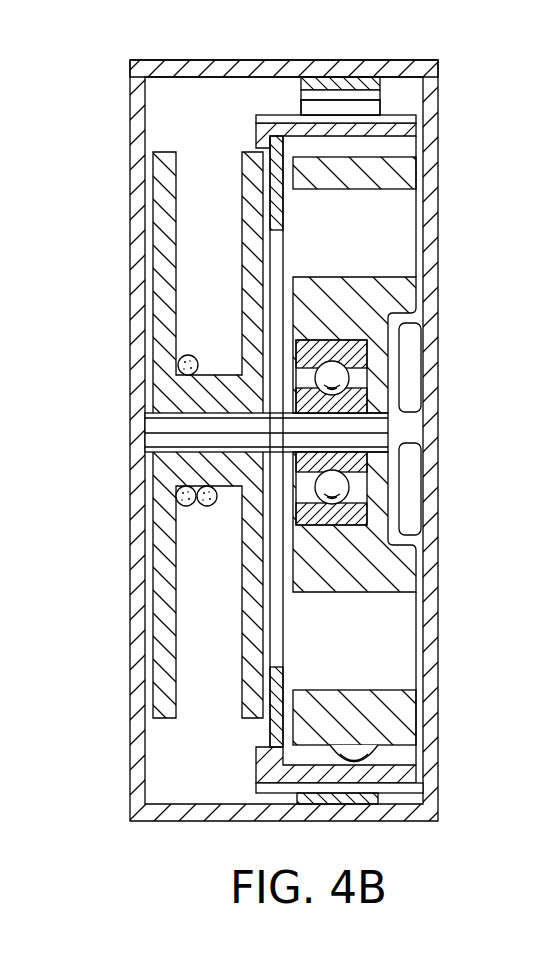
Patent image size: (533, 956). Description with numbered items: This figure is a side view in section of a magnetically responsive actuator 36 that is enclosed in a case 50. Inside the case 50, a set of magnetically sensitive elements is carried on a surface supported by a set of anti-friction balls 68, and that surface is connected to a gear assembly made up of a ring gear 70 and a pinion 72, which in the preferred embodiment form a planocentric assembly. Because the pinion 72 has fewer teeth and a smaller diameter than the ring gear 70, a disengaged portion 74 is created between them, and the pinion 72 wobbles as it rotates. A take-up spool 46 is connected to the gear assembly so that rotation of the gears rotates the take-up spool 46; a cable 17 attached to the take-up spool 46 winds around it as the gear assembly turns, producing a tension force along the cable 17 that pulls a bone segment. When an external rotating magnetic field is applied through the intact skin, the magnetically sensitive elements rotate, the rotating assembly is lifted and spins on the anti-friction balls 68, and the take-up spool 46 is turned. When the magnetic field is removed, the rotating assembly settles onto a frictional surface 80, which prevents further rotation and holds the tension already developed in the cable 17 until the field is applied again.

The actuator 36 is at (272, 55).
The case 50 is at (365, 63).
The ring gear 70 is at (380, 90).
The disengaged portion 74 is at (352, 104).
The pinion 72 is at (383, 130).
The frictional surface 80 is at (424, 205).
The take-up spool 46 is at (163, 183).
The cable 17 is at (178, 363).
The anti-friction balls 68 is at (347, 750).